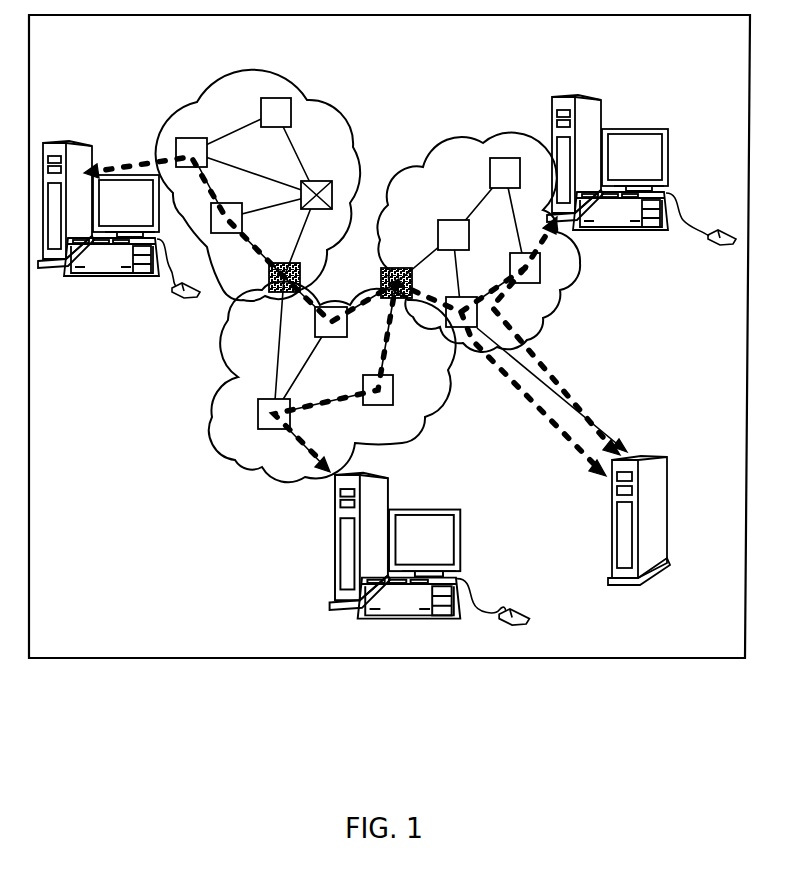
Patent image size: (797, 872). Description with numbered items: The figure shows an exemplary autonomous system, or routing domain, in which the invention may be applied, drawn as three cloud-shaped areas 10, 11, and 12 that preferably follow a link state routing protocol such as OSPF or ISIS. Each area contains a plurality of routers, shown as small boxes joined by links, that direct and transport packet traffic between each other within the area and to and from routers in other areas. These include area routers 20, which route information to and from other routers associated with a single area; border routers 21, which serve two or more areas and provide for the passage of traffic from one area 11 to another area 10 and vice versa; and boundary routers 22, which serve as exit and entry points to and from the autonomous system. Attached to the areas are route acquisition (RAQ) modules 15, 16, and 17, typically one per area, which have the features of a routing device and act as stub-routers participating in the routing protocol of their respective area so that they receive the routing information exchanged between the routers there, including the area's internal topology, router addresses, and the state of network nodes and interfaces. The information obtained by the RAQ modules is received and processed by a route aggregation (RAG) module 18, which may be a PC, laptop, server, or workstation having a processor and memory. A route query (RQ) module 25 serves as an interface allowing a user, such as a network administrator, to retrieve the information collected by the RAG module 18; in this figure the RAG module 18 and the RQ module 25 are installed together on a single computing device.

The area 10 is at (307, 372).
The area 11 is at (288, 172).
The area 12 is at (477, 133).
The route acquisition module 15 is at (119, 232).
The route acquisition module 16 is at (430, 558).
The route acquisition module 17 is at (641, 182).
The route aggregation module 18 is at (665, 544).
The area router 20 is at (206, 223).
The border router 21 is at (265, 283).
The boundary router 22 is at (333, 180).
The route query module 25 is at (665, 544).